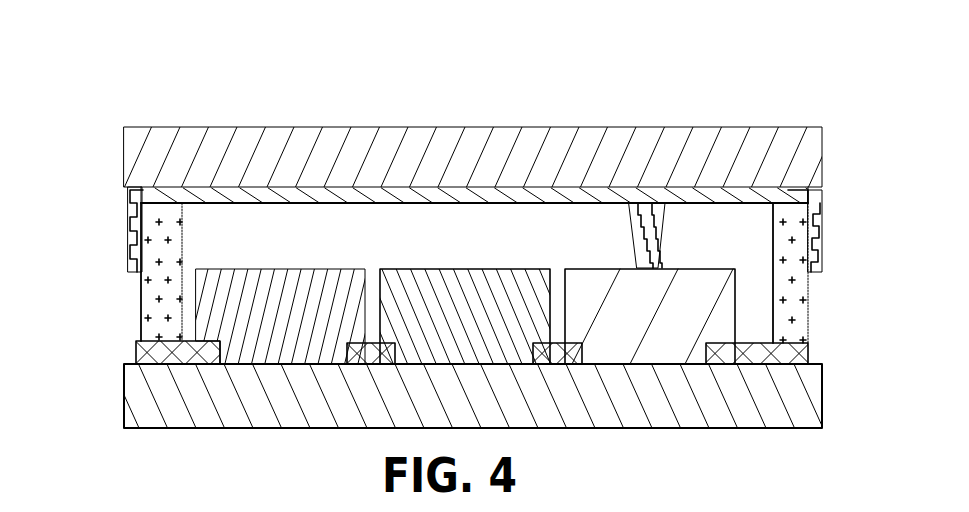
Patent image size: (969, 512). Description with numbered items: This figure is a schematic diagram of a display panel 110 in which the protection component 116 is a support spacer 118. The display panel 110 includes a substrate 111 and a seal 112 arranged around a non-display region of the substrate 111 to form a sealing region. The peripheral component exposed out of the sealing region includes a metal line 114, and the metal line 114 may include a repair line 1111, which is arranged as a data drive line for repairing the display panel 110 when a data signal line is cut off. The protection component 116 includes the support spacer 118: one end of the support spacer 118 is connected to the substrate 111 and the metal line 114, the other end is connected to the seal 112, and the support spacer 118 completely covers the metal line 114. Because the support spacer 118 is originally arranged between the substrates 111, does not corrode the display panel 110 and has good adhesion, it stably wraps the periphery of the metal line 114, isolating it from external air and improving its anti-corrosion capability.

The display panel 110 is at (432, 113).
The substrate 111 is at (812, 408).
The seal 112 is at (155, 332).
The metal line 114 is at (196, 195).
The repair line 1111 is at (474, 273).
The protection component 116 is at (131, 222).
The support spacer 118 is at (485, 227).